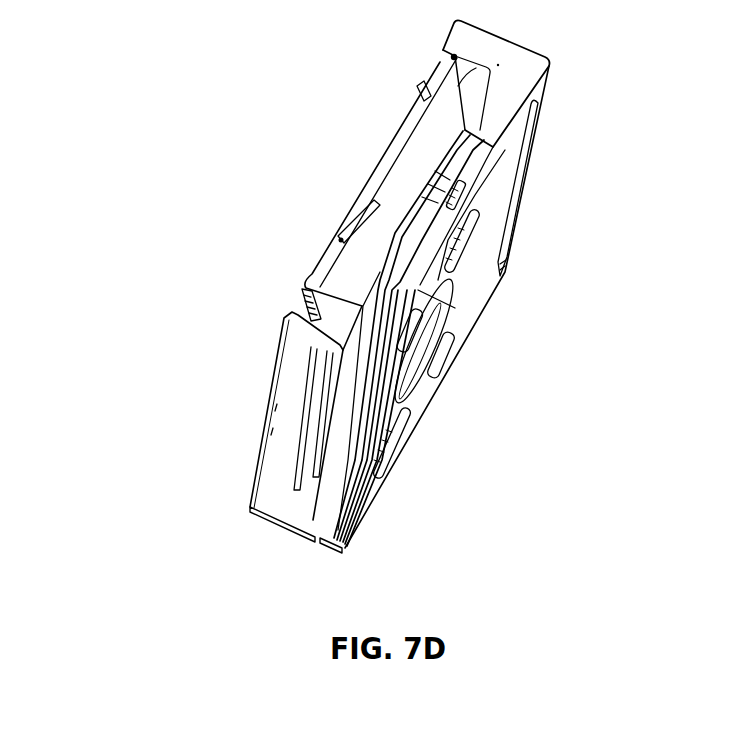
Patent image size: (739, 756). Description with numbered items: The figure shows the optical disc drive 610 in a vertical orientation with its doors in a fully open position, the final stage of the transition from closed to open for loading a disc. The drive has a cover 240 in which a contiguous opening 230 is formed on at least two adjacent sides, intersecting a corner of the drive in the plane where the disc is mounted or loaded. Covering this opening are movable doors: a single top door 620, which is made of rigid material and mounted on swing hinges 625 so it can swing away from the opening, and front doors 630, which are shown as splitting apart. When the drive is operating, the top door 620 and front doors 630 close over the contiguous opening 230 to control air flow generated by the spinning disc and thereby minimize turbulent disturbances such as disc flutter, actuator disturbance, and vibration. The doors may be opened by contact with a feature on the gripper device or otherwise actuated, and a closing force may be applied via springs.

The optical disc drive 610 is at (102, 114).
The top door 620 is at (457, 88).
The swing hinges 625 is at (351, 212).
The cover 240 is at (470, 280).
The front doors 630 is at (293, 515).
The contiguous opening 230 is at (325, 518).